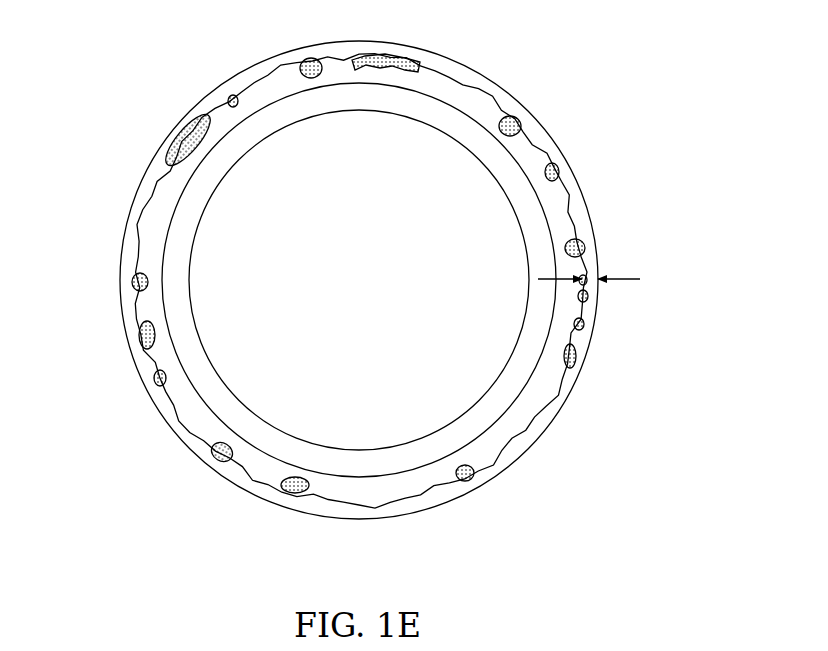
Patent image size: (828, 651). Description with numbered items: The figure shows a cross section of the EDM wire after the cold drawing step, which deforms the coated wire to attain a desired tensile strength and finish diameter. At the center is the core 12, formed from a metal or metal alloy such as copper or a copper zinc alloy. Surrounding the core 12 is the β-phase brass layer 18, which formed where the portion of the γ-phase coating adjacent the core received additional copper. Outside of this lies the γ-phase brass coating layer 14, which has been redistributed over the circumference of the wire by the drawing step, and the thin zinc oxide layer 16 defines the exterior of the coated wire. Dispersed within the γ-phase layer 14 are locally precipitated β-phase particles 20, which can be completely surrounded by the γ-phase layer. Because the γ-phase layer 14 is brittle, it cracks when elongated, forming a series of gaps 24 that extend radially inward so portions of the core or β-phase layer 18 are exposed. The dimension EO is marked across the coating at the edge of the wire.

The core 12 is at (226, 305).
The coating layer 14 is at (185, 138).
The zinc oxide layer 16 is at (546, 140).
The β-phase brass layer 18 is at (424, 80).
The β-phase particles 20 is at (310, 60).
The gaps 24 is at (231, 99).
The edge offset dimension EO is at (603, 282).